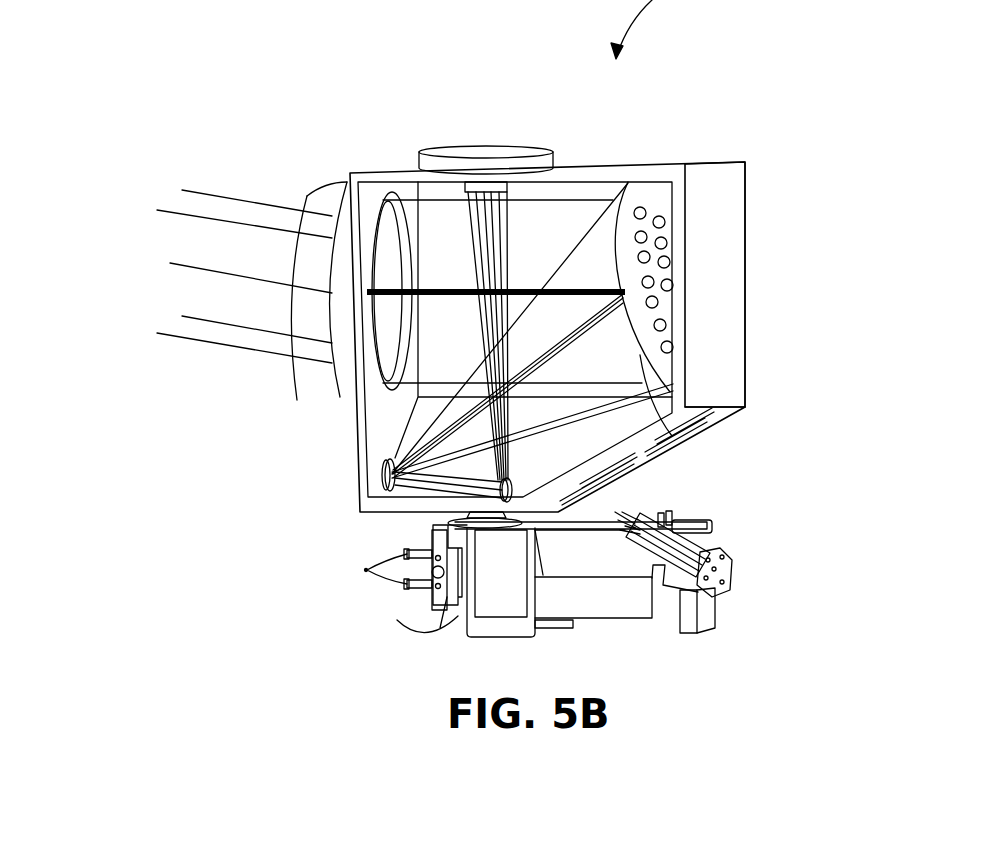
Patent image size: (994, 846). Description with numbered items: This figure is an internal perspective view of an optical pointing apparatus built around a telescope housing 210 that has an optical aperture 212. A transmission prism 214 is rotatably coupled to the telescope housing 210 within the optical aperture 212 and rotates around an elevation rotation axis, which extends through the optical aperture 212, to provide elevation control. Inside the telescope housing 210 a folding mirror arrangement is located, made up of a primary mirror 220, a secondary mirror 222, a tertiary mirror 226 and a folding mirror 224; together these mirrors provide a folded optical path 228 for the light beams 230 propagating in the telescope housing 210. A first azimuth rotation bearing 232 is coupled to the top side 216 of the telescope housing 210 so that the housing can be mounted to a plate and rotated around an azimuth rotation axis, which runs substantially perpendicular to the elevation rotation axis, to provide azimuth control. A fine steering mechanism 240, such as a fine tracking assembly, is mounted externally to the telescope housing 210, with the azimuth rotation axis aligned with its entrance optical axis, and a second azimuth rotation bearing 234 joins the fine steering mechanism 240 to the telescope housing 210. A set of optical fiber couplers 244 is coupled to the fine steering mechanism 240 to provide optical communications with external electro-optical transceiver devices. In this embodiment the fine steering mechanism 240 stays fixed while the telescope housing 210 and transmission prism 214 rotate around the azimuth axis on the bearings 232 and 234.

The telescope housing 210 is at (350, 427).
The optical aperture 212 is at (373, 322).
The transmission prism 214 is at (305, 203).
The top side 216 is at (650, 160).
The primary mirror 220 is at (648, 418).
The secondary mirror 222 is at (370, 488).
The folding mirror 224 is at (585, 493).
The tertiary mirror 226 is at (470, 185).
The folded optical path 228 is at (570, 262).
The light beams 230 is at (222, 272).
The first azimuth rotation bearing 232 is at (478, 143).
The second azimuth rotation bearing 234 is at (432, 533).
The fine steering mechanism 240 is at (548, 608).
The optical fiber couplers 244 is at (733, 573).